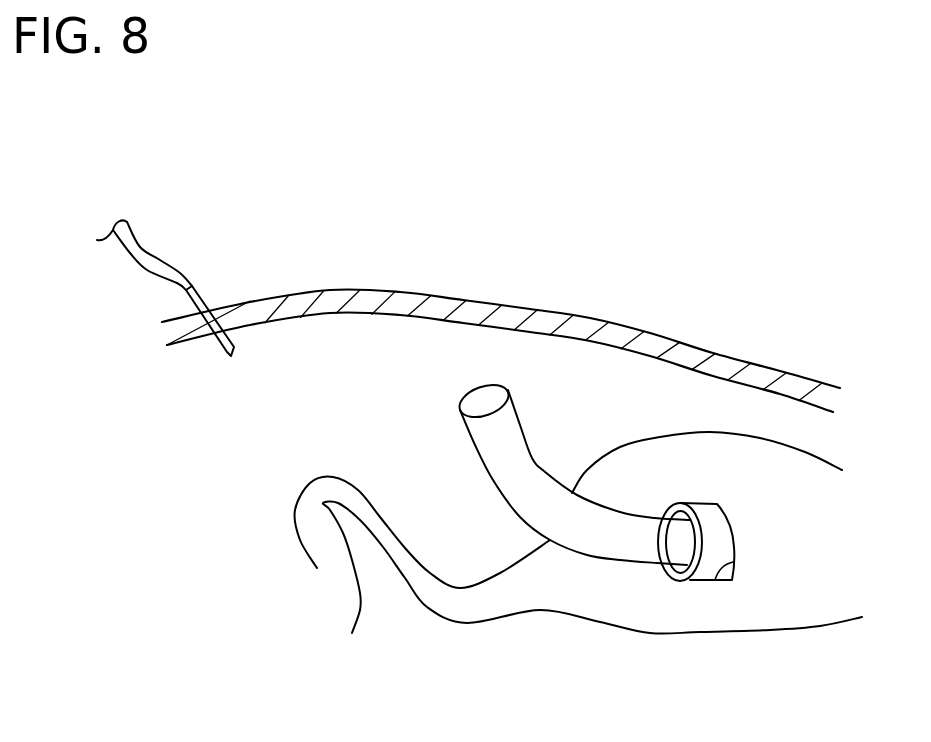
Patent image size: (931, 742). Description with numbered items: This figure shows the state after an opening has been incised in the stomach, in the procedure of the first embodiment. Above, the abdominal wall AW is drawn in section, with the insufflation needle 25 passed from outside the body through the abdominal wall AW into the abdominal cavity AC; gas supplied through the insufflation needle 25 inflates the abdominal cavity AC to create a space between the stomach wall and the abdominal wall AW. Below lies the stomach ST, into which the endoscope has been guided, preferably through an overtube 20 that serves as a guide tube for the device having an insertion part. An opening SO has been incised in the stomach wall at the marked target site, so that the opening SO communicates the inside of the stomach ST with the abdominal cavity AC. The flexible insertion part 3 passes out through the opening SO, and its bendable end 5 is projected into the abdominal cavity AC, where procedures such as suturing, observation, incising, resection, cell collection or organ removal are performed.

The insufflation needle 25 is at (202, 295).
The abdominal wall AW is at (475, 307).
The abdominal cavity AC is at (236, 394).
The insertion part 3 is at (555, 460).
The stomach ST is at (683, 450).
The end 5 is at (502, 432).
The overtube 20 is at (688, 582).
The opening SO is at (717, 582).